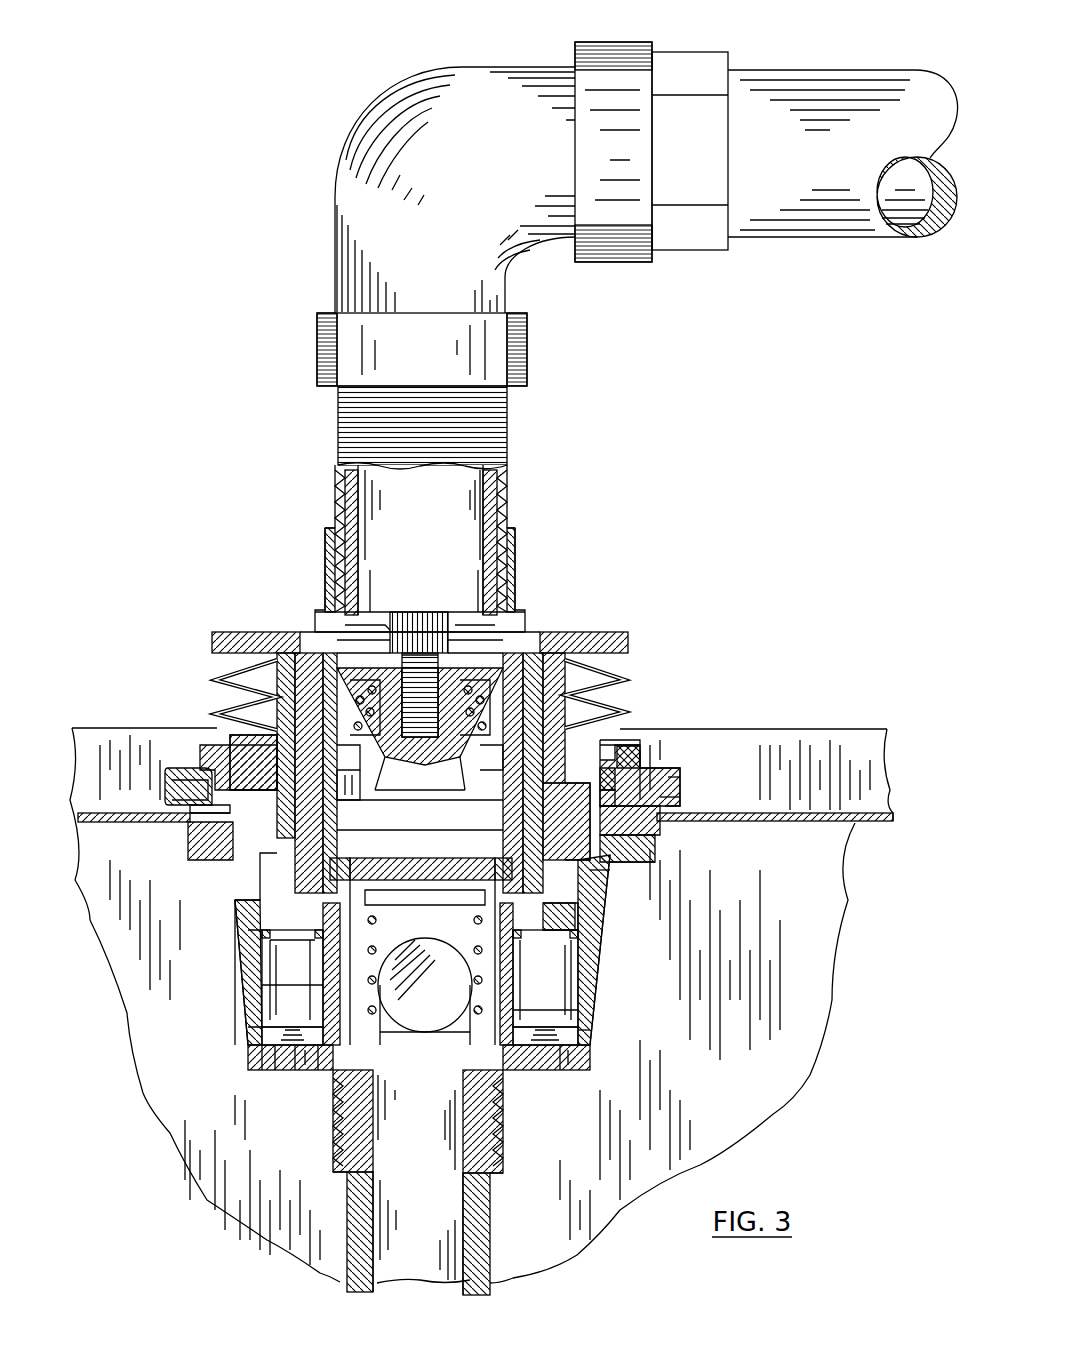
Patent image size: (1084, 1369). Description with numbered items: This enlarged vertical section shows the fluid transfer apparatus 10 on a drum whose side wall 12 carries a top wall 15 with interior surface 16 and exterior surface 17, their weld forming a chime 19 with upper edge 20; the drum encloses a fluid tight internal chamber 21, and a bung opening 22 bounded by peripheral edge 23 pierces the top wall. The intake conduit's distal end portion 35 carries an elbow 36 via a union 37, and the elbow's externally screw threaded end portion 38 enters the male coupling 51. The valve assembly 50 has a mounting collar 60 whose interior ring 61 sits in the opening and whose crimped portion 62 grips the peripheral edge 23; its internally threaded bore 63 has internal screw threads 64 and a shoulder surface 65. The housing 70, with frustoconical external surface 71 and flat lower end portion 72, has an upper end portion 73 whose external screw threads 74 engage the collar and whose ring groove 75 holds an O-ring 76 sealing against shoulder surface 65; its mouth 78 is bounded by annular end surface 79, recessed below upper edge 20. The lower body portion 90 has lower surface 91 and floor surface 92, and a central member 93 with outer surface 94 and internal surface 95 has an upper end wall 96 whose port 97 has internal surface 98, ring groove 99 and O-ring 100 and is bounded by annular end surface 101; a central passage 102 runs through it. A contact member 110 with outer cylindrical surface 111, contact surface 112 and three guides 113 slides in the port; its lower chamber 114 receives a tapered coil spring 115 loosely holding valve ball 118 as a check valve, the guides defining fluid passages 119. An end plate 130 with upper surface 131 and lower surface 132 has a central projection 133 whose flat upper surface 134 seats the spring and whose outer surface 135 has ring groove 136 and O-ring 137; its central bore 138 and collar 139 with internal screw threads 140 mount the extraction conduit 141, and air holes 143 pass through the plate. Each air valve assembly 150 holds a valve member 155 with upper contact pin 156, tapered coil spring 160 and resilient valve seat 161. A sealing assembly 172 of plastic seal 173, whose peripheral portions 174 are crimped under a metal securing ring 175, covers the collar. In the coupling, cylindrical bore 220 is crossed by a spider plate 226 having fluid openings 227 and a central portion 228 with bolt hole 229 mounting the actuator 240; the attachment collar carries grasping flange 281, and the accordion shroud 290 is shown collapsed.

The faucet assembly 10 is at (622, 606).
The below-deck region 12 is at (710, 957).
The deck lower surface 15 is at (893, 820).
The deck edge 16 is at (848, 852).
The deck bottom plate 17 is at (858, 812).
The deck interior 19 is at (786, 778).
The mounting deck 20 is at (765, 730).
The below-deck wall 21 is at (785, 932).
The lower retaining ring 22 is at (188, 850).
The washer 23 is at (190, 818).
The outlet pipe 35 is at (775, 70).
The elbow 36 is at (380, 133).
The coupling 37 is at (690, 52).
The union nut 38 is at (338, 421).
The valve housing assembly 50 is at (232, 964).
The threaded inlet nipple 51 is at (548, 615).
The right mounting flange 60 is at (665, 835).
The flange lower surface 61 is at (645, 865).
The seal retainer 62 is at (688, 754).
The flange inner wall 63 is at (600, 872).
The flange block 64 is at (657, 850).
The seal lip 65 is at (635, 758).
The housing body 70 is at (240, 1005).
The housing upper wall 71 is at (240, 914).
The housing bottom plate 72 is at (248, 1062).
The left seal cap 73 is at (205, 760).
The left gasket 74 is at (195, 805).
The left seal ring 75 is at (170, 777).
The seal ring groove 76 is at (178, 788).
The left bellows 78 is at (228, 688).
The bellows retainer 79 is at (245, 735).
The right valve block 90 is at (590, 939).
The right bottom plate 91 is at (556, 1070).
The central body wall 92 is at (590, 880).
The seal element 93 is at (560, 772).
The seal element 94 is at (560, 787).
The stem guide 95 is at (462, 768).
The stem cone 96 is at (430, 760).
The right spring 97 is at (455, 740).
The left spring 98 is at (385, 740).
The left spring seat 99 is at (380, 775).
The right spring seat 100 is at (475, 775).
The left body wall 101 is at (300, 652).
The stem bore 102 is at (360, 820).
The right bearing 110 is at (500, 858).
The left bearing 111 is at (345, 860).
The piston plate 112 is at (398, 862).
The left coil spring 113 is at (390, 934).
The right coil spring 114 is at (480, 942).
The piston bore 115 is at (322, 1006).
The ball valve 118 is at (398, 982).
The spring retainer 119 is at (430, 896).
The bottom plate bore 130 is at (320, 1072).
The right bottom seal 131 is at (590, 1037).
The left bottom seal 132 is at (268, 1070).
The ball seat 133 is at (445, 1037).
The ball guide 134 is at (478, 1002).
The right piston face 135 is at (528, 1027).
The central bore wall 136 is at (500, 1057).
The threaded outlet section 137 is at (490, 1084).
The outlet bore 138 is at (412, 1070).
The thread shoulder 139 is at (503, 1148).
The outlet inner wall 140 is at (465, 1152).
The outlet pipe 141 is at (490, 1232).
The bottom plate seal 143 is at (296, 1072).
The cylinder wall 150 is at (592, 986).
The piston 155 is at (278, 993).
The piston rod 156 is at (275, 947).
The piston seal 160 is at (580, 1037).
The piston ring 161 is at (262, 947).
The right seal lip 172 is at (700, 765).
The seal groove 173 is at (688, 777).
The seal base 174 is at (690, 797).
The seal insert 175 is at (655, 758).
The stem sleeve 220 is at (340, 800).
The adjusting screw head 226 is at (392, 625).
The screw washer 227 is at (386, 612).
The screw shank 228 is at (430, 612).
The screw neck 229 is at (420, 620).
The stem chamber 240 is at (400, 816).
The mounting plate 281 is at (615, 640).
The right bellows 290 is at (600, 675).